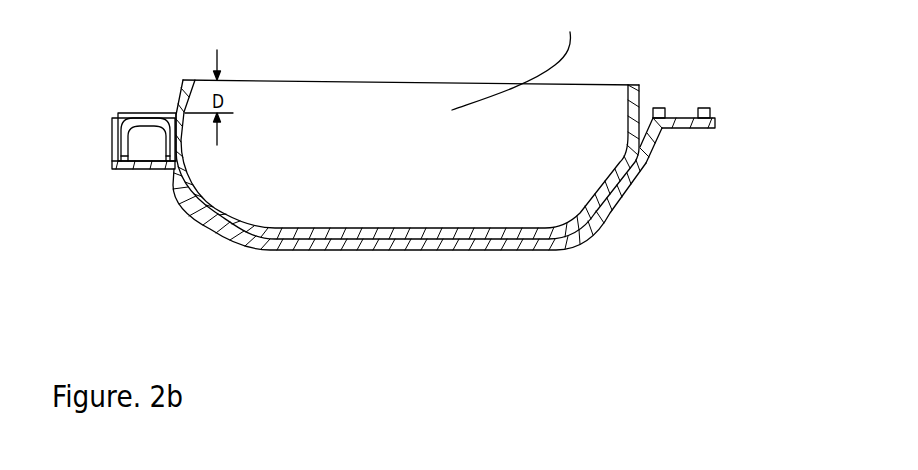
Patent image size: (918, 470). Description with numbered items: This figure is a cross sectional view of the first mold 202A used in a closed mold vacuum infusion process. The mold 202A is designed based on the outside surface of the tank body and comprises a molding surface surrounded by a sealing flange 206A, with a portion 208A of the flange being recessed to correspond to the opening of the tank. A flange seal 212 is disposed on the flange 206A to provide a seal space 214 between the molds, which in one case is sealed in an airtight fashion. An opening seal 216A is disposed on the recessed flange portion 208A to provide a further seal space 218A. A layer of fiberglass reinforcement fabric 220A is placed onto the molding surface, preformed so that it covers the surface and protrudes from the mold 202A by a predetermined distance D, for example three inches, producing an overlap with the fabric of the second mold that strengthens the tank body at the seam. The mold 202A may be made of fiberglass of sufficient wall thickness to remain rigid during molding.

The mold 202A is at (458, 240).
The sealing flange 206A is at (716, 118).
The recessed flange portion 208A is at (147, 167).
The flange seal 212 is at (705, 108).
The seal space 214 is at (692, 125).
The opening seal 216A is at (118, 134).
The seal space 218A is at (146, 136).
The fabric layer 220A is at (628, 101).